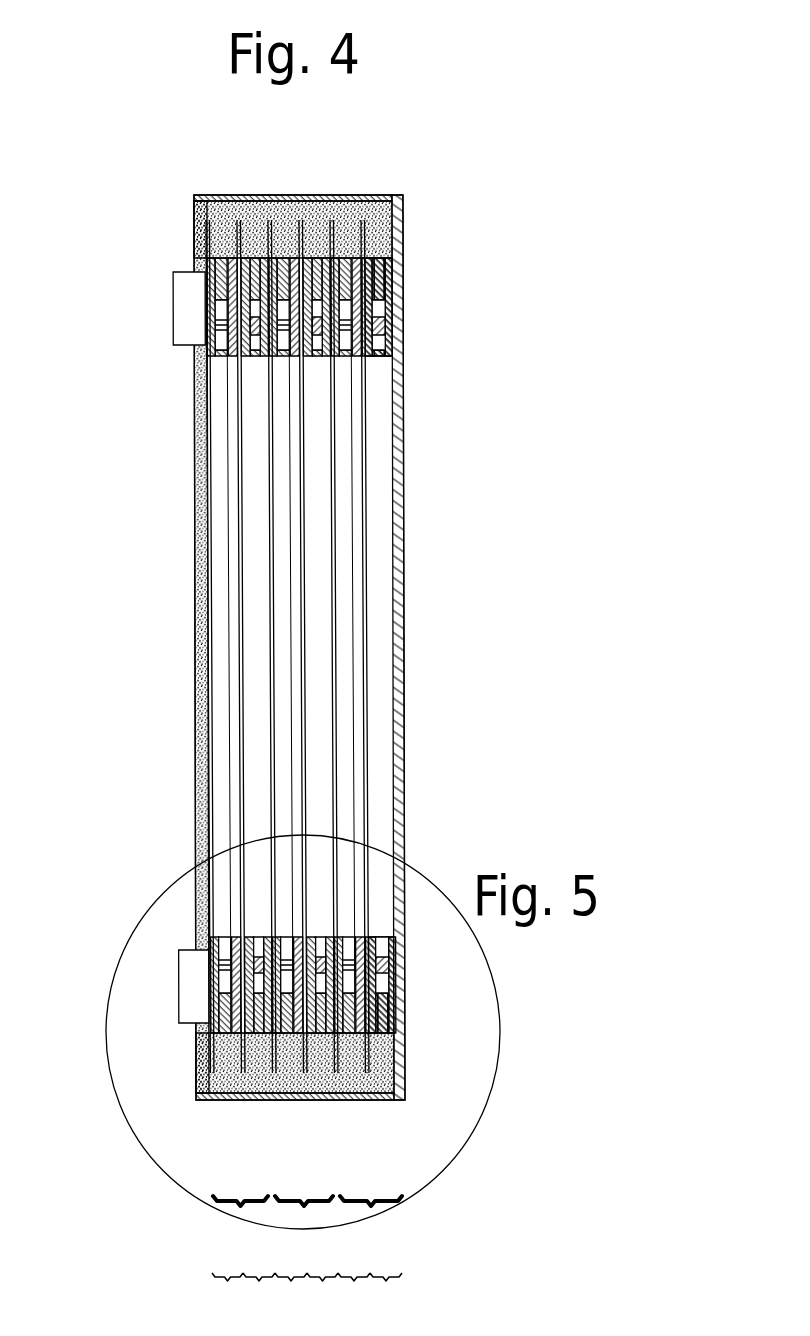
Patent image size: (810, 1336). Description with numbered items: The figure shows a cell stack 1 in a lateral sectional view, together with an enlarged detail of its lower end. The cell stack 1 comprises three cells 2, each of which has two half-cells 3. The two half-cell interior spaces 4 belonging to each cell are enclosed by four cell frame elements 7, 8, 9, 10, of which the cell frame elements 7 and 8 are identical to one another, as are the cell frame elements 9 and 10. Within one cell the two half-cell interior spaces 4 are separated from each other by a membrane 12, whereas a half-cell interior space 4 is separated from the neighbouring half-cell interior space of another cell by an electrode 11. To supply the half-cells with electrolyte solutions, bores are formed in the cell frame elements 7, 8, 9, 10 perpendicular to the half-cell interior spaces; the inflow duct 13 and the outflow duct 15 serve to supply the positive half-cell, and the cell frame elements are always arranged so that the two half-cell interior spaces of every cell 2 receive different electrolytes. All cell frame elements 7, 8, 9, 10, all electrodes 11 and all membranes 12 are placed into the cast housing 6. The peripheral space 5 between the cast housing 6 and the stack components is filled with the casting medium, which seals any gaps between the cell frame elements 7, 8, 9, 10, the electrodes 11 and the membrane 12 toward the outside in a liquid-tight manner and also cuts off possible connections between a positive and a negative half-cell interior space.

In FIG. 4, the cell stack 1 is at (517, 110).
In FIG. 5, the cell 2 is at (307, 1223).
In FIG. 5, the half-cell 3 is at (307, 1296).
In FIG. 4, the half-cell interior space 4 is at (228, 617).
In FIG. 4, the space 5 is at (315, 202).
In FIG. 4, the cast housing 6 is at (290, 198).
In FIG. 4, the cell frame element 7 is at (205, 262).
In FIG. 4, the cell frame element 8 is at (204, 258).
In FIG. 4, the cell frame element 9 is at (370, 321).
In FIG. 4, the cell frame element 10 is at (362, 302).
In FIG. 5, the electrode 11 is at (205, 1052).
In FIG. 5, the membrane 12 is at (233, 1070).
In FIG. 4, the inflow duct 13 is at (165, 307).
In FIG. 5, the outflow duct 15 is at (168, 985).